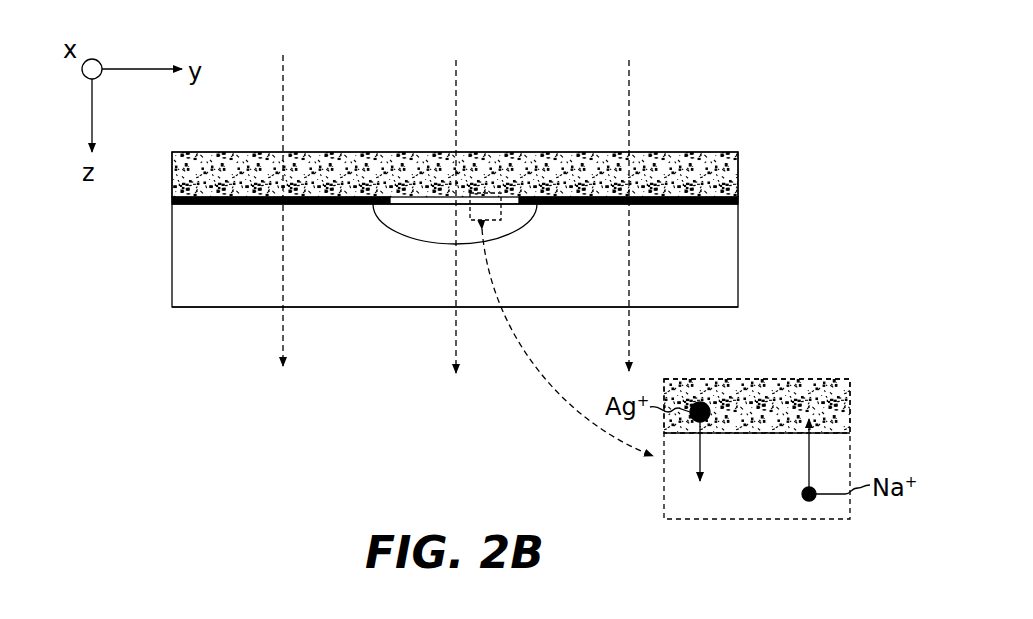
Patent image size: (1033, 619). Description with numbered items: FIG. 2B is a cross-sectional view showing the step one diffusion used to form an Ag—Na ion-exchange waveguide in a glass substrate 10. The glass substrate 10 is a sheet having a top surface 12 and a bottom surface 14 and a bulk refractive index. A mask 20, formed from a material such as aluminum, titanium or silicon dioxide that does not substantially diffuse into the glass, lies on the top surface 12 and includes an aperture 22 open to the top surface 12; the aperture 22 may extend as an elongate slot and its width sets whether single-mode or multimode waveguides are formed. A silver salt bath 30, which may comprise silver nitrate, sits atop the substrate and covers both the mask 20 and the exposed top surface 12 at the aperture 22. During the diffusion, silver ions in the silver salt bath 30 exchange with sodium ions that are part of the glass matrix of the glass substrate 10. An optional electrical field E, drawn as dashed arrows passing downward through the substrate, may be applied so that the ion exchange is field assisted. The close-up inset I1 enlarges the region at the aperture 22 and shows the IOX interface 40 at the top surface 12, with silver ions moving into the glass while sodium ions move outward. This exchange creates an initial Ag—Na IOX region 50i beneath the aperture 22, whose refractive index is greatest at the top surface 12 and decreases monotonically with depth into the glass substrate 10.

The glass substrate 10 is at (765, 103).
The top surface 12 is at (430, 198).
The bottom surface 14 is at (708, 308).
The mask 20 is at (671, 194).
The aperture 22 is at (510, 192).
The silver salt bath 30 is at (738, 176).
The IOX interface 40 is at (772, 428).
The initial Ag—Na IOX region 50i is at (425, 222).
The electrical field E is at (283, 83).
The close-up inset I1 is at (840, 360).